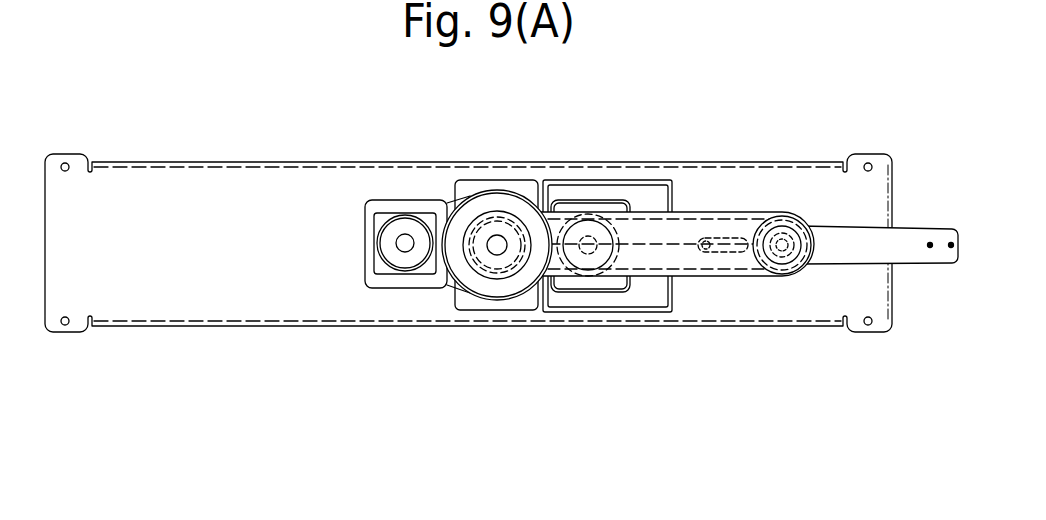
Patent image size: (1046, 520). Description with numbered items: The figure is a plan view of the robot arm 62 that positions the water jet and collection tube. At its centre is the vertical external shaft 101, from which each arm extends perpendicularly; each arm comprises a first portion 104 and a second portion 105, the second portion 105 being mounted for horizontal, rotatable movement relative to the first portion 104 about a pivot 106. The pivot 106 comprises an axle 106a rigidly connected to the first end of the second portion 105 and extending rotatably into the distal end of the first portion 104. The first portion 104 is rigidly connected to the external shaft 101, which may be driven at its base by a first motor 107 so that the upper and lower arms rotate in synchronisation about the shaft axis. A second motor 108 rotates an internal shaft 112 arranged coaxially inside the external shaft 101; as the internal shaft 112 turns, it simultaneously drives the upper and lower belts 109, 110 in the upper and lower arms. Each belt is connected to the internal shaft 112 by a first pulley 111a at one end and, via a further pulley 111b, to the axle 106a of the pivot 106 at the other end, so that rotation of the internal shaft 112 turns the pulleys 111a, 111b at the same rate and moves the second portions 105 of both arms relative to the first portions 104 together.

The robot arm 62 is at (684, 97).
The external shaft 101 is at (482, 239).
The first portion 104 is at (735, 212).
The second portion 105 is at (912, 236).
The pivot 106 is at (818, 249).
The axle 106a is at (778, 255).
The first motor 107 is at (606, 198).
The second motor 108 is at (363, 202).
The upper belt 109 is at (691, 316).
The lower belt 110 is at (698, 268).
The first pulley 111a is at (543, 258).
The pulley 111b is at (762, 210).
The internal shaft 112 is at (478, 253).